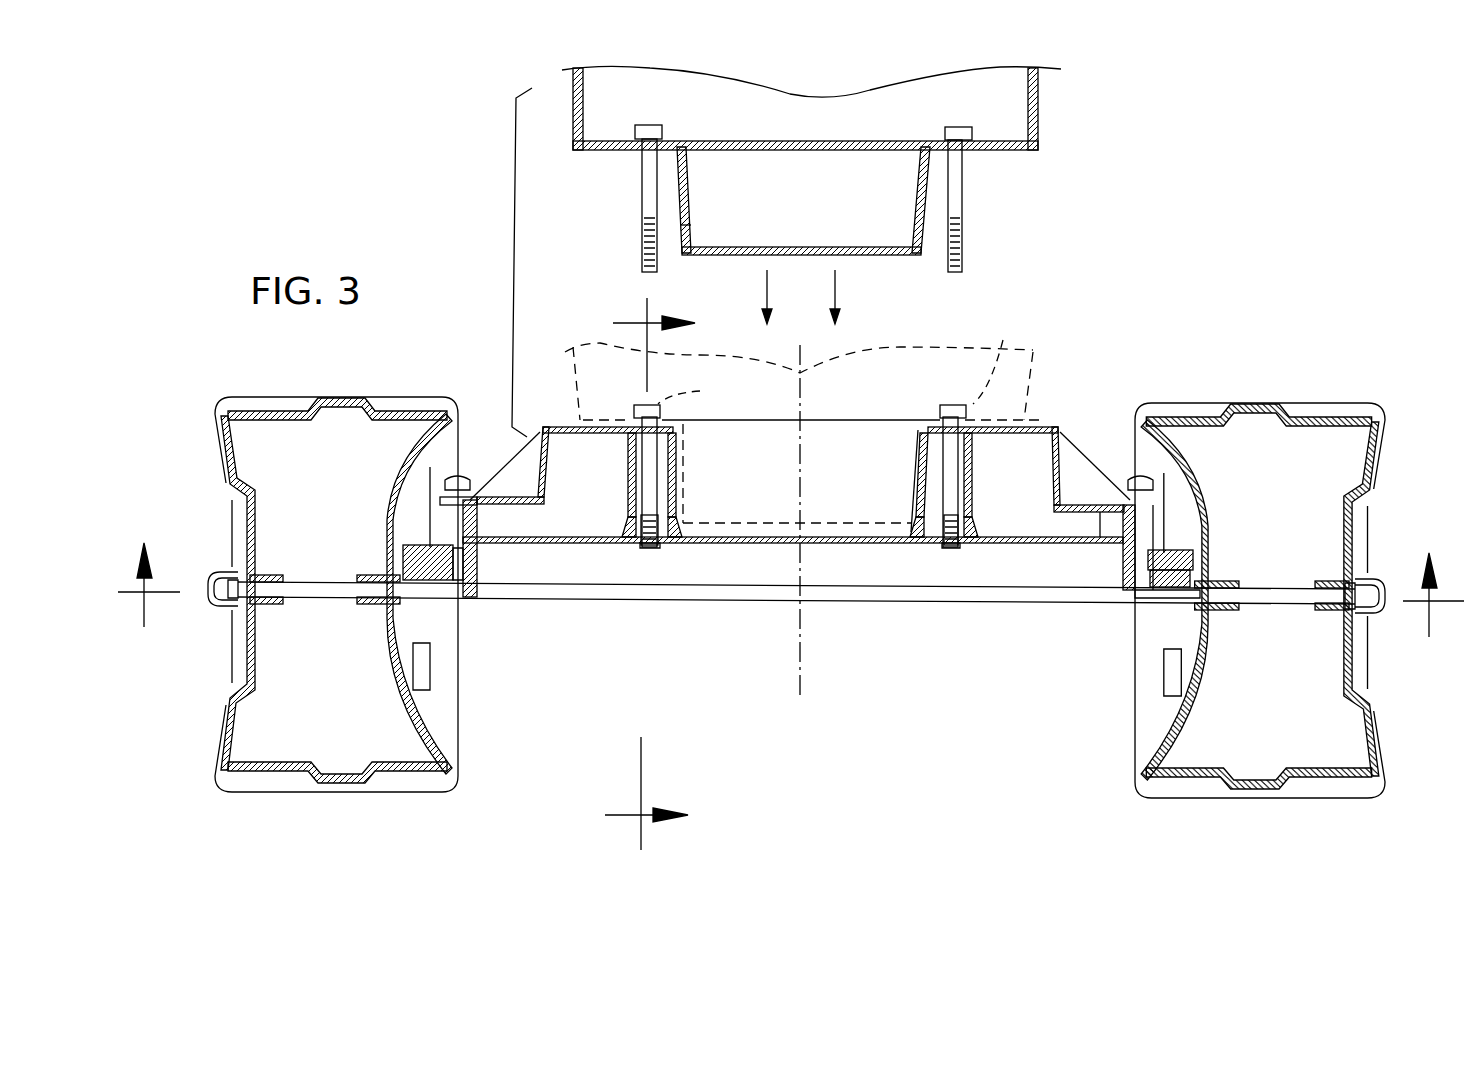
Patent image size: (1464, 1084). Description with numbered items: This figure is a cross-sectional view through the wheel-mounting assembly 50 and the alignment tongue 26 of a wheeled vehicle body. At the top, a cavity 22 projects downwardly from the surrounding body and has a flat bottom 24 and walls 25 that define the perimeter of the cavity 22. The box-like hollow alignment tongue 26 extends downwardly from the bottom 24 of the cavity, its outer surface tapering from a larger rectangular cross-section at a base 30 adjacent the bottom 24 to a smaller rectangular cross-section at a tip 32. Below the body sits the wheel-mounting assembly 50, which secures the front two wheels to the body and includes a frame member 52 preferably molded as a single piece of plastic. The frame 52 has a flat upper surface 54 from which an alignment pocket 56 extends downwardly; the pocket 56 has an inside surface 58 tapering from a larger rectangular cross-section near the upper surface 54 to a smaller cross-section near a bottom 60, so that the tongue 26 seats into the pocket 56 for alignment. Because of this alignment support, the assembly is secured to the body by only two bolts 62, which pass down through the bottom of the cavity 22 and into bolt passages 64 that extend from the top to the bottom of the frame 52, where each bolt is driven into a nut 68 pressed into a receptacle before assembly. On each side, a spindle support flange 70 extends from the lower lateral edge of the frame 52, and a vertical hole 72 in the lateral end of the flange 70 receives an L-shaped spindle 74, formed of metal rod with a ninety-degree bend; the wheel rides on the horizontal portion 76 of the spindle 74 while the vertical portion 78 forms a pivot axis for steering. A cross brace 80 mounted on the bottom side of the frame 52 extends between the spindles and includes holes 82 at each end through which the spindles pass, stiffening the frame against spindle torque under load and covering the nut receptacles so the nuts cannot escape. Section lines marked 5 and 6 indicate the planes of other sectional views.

The cavity 22 is at (897, 232).
The flat bottom 24 is at (608, 140).
The walls 25 is at (690, 184).
The alignment tongue 26 is at (681, 238).
The base 30 is at (920, 147).
The tip 32 is at (804, 255).
The wheel-mounting assembly 50 is at (1073, 393).
The frame member 52 is at (1072, 437).
The flat upper surface 54 is at (557, 427).
The alignment pocket 56 is at (850, 468).
The inside surface 58 is at (912, 491).
The bottom 60 is at (773, 531).
The bolts 62 is at (640, 178).
The bolt passages 64 is at (640, 470).
The nut 68 is at (626, 546).
The spindle support flange 70 is at (500, 490).
The vertical hole 72 is at (1133, 600).
The L-shaped spindle 74 is at (1262, 587).
The horizontal portion 76 is at (1271, 604).
The vertical portion 78 is at (1203, 572).
The cross brace 80 is at (863, 545).
The holes 82 is at (453, 550).
The section line 5- 5 is at (650, 573).
The section line 6- 6 is at (791, 594).